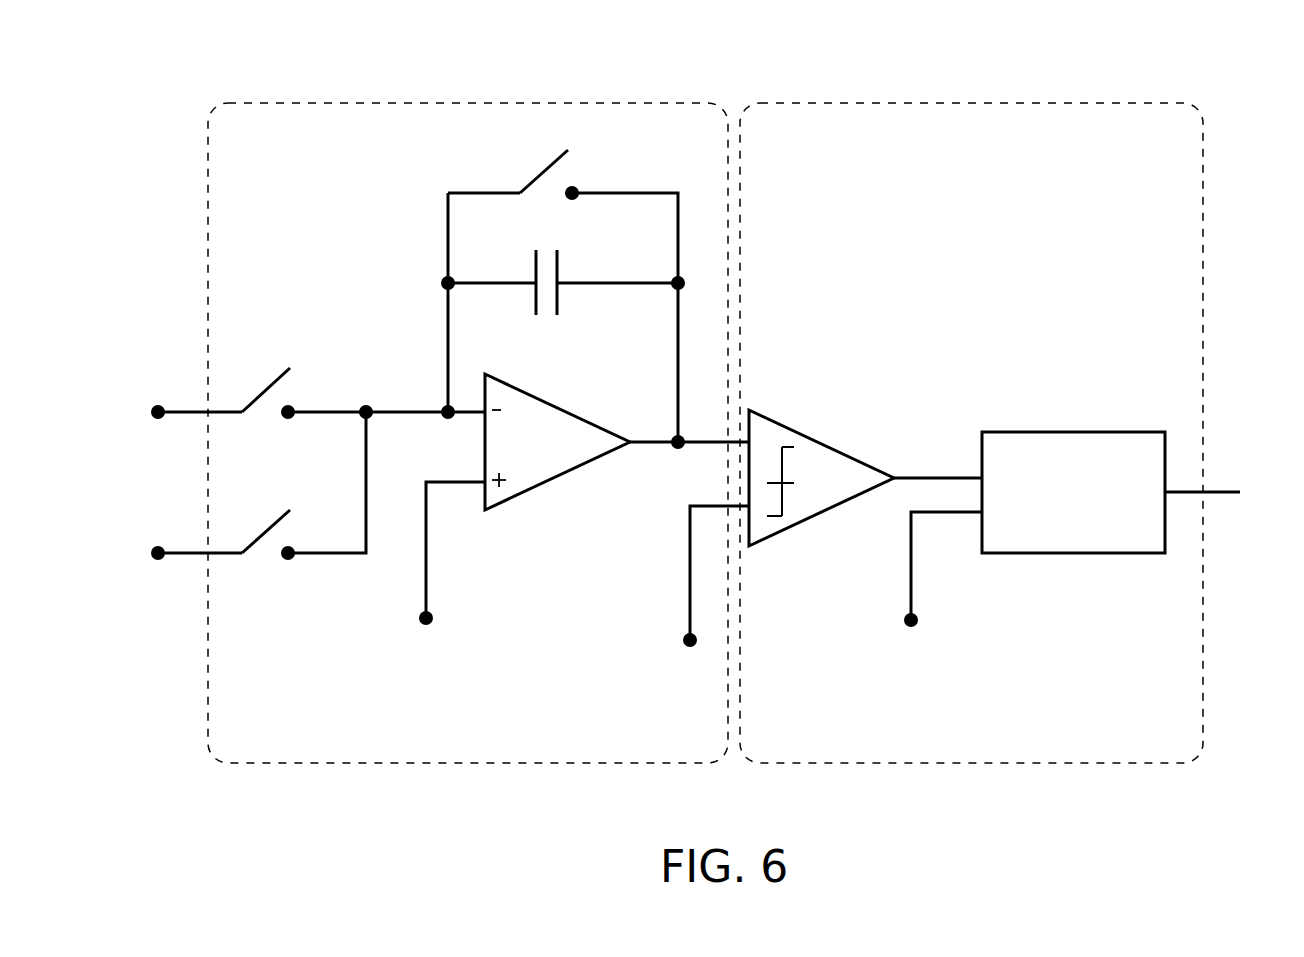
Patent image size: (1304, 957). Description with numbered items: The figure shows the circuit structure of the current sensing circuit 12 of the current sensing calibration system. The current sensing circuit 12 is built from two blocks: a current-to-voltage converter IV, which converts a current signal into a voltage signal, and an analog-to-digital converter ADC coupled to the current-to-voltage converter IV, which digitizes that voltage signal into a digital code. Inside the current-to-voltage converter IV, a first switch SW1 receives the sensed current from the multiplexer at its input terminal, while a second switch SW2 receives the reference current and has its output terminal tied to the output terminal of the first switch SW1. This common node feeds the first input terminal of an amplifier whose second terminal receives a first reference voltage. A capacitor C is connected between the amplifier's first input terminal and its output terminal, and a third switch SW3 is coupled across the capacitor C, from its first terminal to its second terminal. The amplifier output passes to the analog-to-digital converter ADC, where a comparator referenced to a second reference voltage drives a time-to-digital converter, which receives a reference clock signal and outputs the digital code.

The current sensing circuit 12 is at (147, 103).
The first switch SW1 is at (268, 390).
The second switch SW2 is at (268, 528).
The third switch SW3 is at (547, 169).
The capacitor C is at (563, 291).
The current-to-voltage converter IV is at (478, 765).
The analog-to-digital converter ADC is at (990, 765).